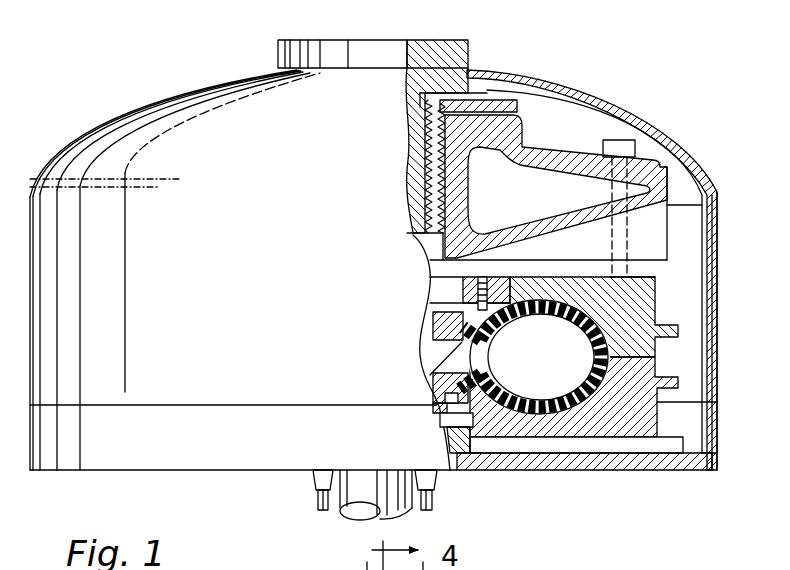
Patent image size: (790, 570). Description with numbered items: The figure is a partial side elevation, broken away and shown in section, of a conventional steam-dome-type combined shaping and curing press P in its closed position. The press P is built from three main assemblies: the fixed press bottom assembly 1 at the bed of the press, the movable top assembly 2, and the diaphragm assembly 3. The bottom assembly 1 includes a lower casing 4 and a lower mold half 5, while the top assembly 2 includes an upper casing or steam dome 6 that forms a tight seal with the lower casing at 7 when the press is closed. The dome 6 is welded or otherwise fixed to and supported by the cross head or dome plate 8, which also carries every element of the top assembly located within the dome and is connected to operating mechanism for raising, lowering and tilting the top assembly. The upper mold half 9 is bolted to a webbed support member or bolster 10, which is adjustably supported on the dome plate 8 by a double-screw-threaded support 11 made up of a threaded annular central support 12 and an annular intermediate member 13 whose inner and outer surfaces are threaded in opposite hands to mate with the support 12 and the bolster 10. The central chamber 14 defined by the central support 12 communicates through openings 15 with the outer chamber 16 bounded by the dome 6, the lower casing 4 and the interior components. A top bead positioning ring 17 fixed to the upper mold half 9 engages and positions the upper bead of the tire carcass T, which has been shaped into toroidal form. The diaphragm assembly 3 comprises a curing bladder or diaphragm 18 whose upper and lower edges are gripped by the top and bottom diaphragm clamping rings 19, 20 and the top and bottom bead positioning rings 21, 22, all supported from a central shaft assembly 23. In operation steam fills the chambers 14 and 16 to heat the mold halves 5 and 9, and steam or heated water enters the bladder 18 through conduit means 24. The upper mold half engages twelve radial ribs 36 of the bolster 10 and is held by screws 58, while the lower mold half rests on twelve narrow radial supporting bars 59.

The press P is at (62, 145).
The fixed press bottom assembly 1 is at (610, 480).
The movable top assembly 2 is at (718, 166).
The diaphragm assembly 3 is at (478, 333).
The lower casing 4 is at (32, 450).
The lower mold half 5 is at (638, 432).
The upper casing or steam dome 6 is at (125, 113).
The seal 7 is at (162, 404).
The cross head or dome plate 8 is at (285, 40).
The upper mold half 9 is at (640, 318).
The webbed support member or bolster 10 is at (548, 250).
The double-screw-threaded support 11 is at (508, 123).
The threaded annular central support 12 is at (405, 148).
The annular intermediate member 13 is at (425, 196).
The central chamber 14 is at (412, 248).
The openings 15 is at (648, 236).
The outer chamber 16 is at (699, 284).
The top bead positioning ring 17 is at (492, 303).
The curing bladder or diaphragm 18 is at (590, 355).
The top diaphragm clamping ring 19 is at (468, 305).
The bottom diaphragm clamping ring 20 is at (445, 378).
The top bead positioning ring 21 is at (458, 330).
The bottom bead positioning ring 22 is at (447, 410).
The central shaft assembly 23 is at (376, 513).
The conduit means 24 is at (305, 497).
The radial ribs 36 is at (670, 253).
The screws 58 is at (610, 195).
The radial supporting bars 59 is at (568, 458).
The tire carcass T is at (583, 318).